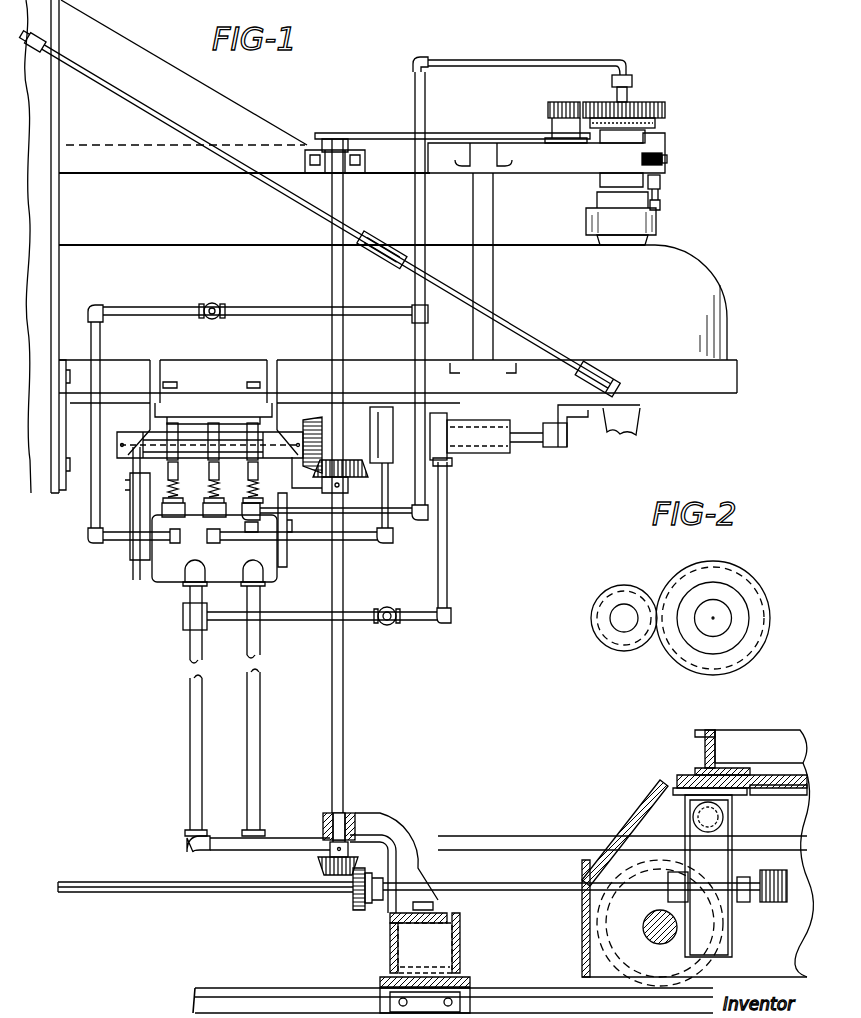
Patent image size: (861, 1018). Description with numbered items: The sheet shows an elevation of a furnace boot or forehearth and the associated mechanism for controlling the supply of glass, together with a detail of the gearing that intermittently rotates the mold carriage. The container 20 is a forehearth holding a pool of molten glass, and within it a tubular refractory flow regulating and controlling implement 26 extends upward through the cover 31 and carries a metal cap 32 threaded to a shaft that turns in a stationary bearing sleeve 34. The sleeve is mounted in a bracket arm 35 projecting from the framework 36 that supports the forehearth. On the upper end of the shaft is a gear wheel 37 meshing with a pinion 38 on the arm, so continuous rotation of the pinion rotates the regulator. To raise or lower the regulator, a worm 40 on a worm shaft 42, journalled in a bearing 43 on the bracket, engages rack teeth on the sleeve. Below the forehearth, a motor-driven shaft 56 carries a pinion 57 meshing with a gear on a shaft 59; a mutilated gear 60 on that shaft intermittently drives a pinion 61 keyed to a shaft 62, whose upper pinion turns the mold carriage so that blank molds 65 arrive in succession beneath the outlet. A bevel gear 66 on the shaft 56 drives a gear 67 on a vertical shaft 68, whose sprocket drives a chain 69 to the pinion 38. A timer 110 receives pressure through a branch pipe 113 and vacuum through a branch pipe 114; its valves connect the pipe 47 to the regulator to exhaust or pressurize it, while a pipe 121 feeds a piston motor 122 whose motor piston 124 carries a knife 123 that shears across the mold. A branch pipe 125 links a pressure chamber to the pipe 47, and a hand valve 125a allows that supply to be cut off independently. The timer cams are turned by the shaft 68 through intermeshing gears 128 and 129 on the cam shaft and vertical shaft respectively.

In FIG. 1, the container 20 is at (717, 285).
In FIG. 1, the flow regulating and controlling implement 26 is at (650, 240).
In FIG. 1, the cover 31 is at (512, 252).
In FIG. 1, the metal cap 32 is at (656, 220).
In FIG. 1, the bearing sleeve 34 is at (645, 143).
In FIG. 1, the bracket arm 35 is at (192, 165).
In FIG. 1, the framework 36 is at (45, 300).
In FIG. 1, the gear wheel 37 is at (650, 104).
In FIG. 1, the pinion 38 is at (562, 102).
In FIG. 1, the worm 40 is at (667, 160).
In FIG. 1, the worm shaft 42 is at (662, 190).
In FIG. 1, the bearing 43 is at (660, 178).
In FIG. 1, the pipe 47 is at (578, 66).
In FIG. 1, the shaft 56 is at (213, 893).
In FIG. 1, the pinion 57 is at (772, 903).
In FIG. 2, the shaft 59 is at (725, 618).
In FIG. 2, the mutilated gear 60 is at (738, 565).
In FIG. 2, the pinion 61 is at (605, 640).
In FIG. 2, the shaft 62 is at (620, 630).
In FIG. 1, the blank mold 65 is at (642, 425).
In FIG. 1, the bevel gear 66 is at (357, 905).
In FIG. 1, the gear 67 is at (318, 866).
In FIG. 1, the vertical shaft 68 is at (343, 706).
In FIG. 1, the chain 69 is at (370, 135).
In FIG. 1, the timer 110 is at (165, 590).
In FIG. 1, the branch pipe 113 is at (192, 757).
In FIG. 1, the branch pipe 114 is at (256, 755).
In FIG. 1, the pipe 121 is at (320, 538).
In FIG. 1, the piston motor 122 is at (440, 470).
In FIG. 1, the knife 123 is at (630, 412).
In FIG. 1, the motor piston 124 is at (533, 440).
In FIG. 1, the branch pipe 125 is at (95, 492).
In FIG. 1, the hand valve 125a is at (217, 304).
In FIG. 1, the gear 128 is at (315, 418).
In FIG. 1, the gear 129 is at (350, 460).